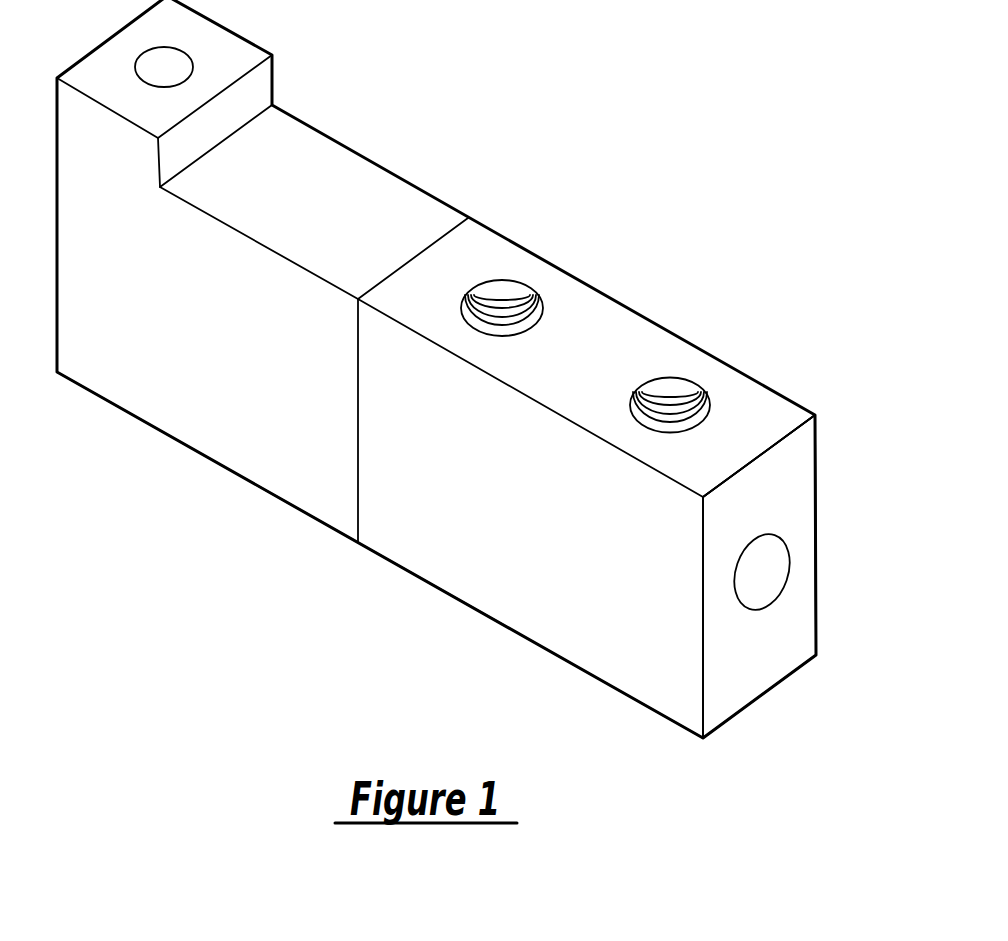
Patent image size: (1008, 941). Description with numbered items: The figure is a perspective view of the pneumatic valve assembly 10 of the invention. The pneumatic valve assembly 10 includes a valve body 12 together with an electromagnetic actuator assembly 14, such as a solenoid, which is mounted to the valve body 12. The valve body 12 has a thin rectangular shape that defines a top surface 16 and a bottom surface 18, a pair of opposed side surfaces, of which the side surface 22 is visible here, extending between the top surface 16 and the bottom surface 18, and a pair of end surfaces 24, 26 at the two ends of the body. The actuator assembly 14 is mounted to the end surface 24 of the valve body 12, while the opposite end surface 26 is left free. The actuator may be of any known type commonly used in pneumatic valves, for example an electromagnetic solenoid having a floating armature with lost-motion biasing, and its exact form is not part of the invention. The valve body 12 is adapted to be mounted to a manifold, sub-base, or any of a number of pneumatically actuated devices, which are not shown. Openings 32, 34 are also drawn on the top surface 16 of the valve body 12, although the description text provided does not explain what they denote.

The pneumatic valve assembly 10 is at (581, 159).
The valve body 12 is at (722, 337).
The electromagnetic actuator assembly 14 is at (356, 132).
The top surface 16 is at (778, 413).
The bottom surface 18 is at (482, 613).
The side surface 22 is at (385, 529).
The end surface 24 is at (430, 243).
The end surface 26 is at (797, 627).
The threaded port 32 is at (708, 393).
The threaded port 34 is at (542, 308).